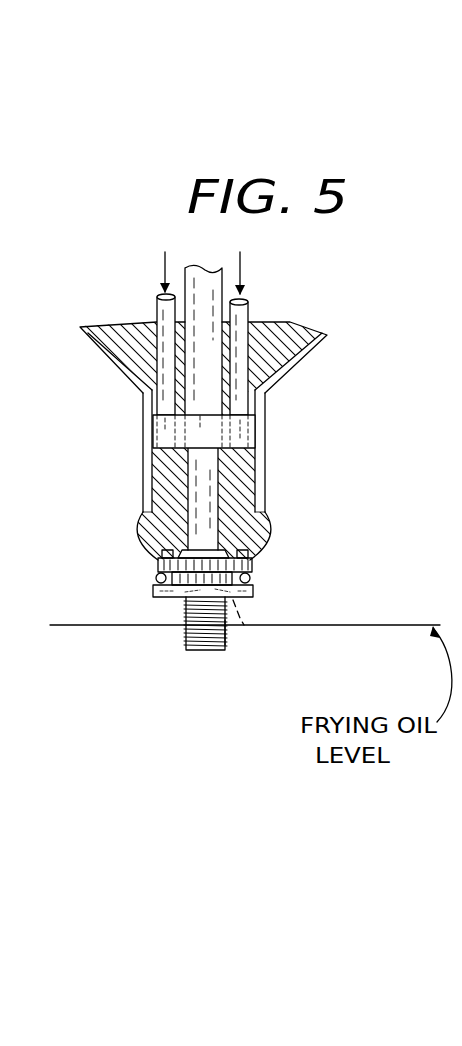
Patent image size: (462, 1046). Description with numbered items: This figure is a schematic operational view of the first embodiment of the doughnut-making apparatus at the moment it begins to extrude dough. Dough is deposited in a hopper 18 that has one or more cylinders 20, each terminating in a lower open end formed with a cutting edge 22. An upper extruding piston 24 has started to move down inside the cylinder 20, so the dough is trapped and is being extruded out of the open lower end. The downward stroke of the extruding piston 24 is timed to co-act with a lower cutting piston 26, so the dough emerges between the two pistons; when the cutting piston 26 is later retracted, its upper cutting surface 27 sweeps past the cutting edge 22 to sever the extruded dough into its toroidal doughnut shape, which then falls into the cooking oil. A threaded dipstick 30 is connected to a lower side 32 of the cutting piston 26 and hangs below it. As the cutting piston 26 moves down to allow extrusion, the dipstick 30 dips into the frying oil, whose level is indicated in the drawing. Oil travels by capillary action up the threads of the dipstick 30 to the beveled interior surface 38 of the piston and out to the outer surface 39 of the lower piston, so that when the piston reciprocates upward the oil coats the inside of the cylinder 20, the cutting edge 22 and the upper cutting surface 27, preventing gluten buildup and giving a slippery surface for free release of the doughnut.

The hopper 18 is at (294, 376).
The cylinder 20 is at (265, 487).
The cutting edge 22 is at (263, 515).
The extruding piston 24 is at (152, 440).
The cutting piston 26 is at (155, 569).
The upper cutting surface 27 is at (266, 537).
The threaded dipstick 30 is at (203, 652).
The lower side of the lower cutting piston 32 is at (224, 632).
The beveled interior surface 38 is at (244, 625).
The outer surface of the lower piston 39 is at (253, 588).